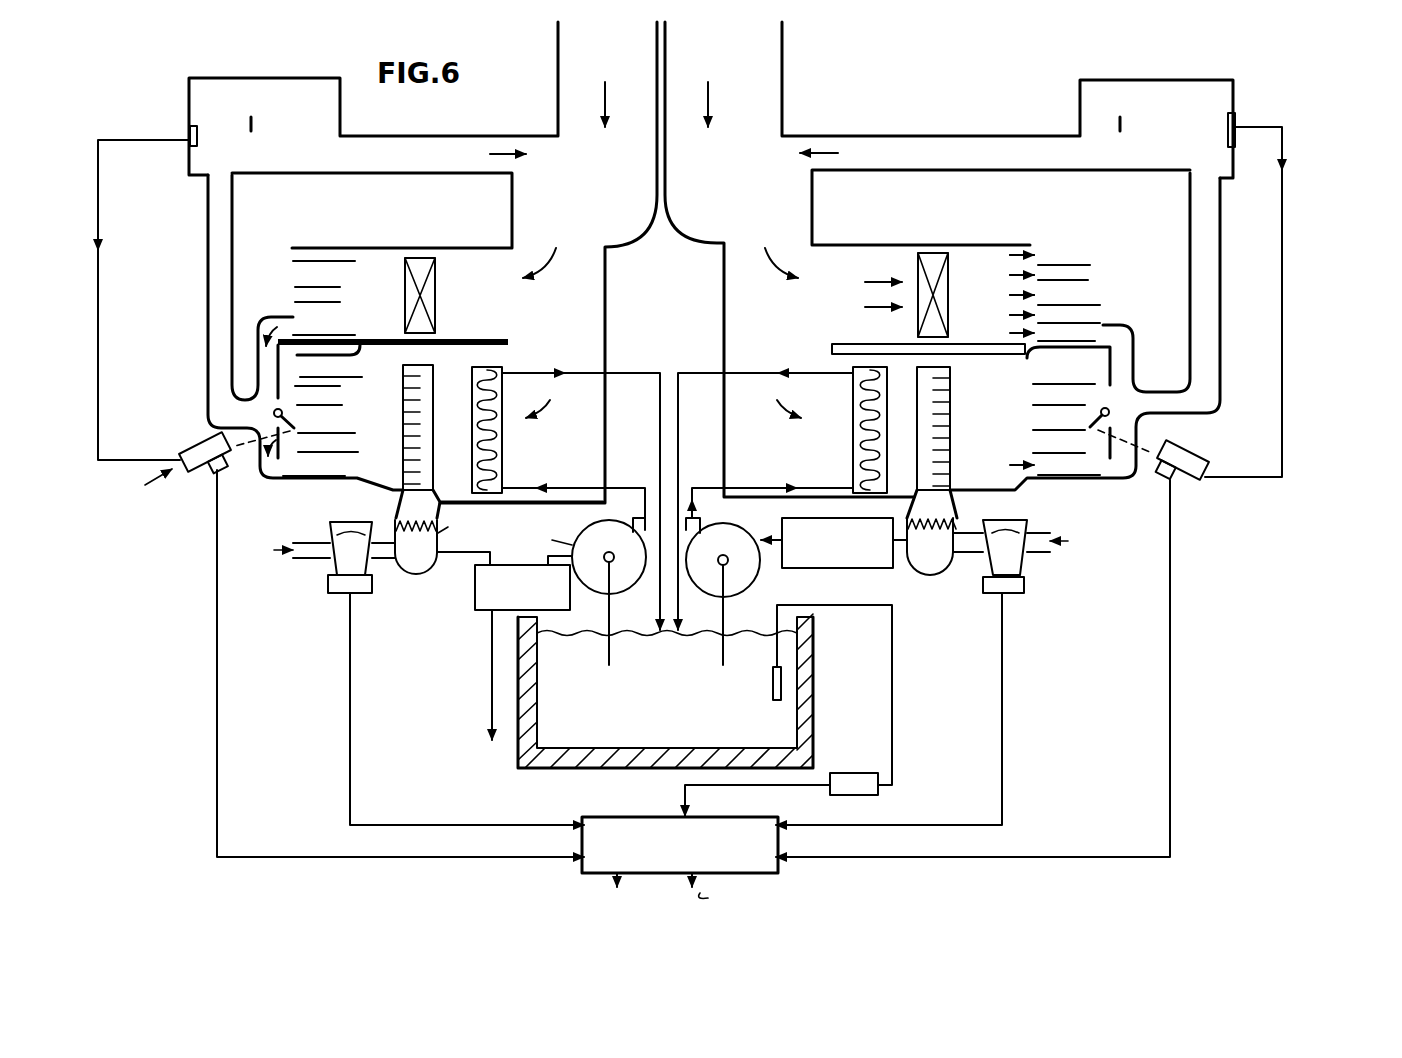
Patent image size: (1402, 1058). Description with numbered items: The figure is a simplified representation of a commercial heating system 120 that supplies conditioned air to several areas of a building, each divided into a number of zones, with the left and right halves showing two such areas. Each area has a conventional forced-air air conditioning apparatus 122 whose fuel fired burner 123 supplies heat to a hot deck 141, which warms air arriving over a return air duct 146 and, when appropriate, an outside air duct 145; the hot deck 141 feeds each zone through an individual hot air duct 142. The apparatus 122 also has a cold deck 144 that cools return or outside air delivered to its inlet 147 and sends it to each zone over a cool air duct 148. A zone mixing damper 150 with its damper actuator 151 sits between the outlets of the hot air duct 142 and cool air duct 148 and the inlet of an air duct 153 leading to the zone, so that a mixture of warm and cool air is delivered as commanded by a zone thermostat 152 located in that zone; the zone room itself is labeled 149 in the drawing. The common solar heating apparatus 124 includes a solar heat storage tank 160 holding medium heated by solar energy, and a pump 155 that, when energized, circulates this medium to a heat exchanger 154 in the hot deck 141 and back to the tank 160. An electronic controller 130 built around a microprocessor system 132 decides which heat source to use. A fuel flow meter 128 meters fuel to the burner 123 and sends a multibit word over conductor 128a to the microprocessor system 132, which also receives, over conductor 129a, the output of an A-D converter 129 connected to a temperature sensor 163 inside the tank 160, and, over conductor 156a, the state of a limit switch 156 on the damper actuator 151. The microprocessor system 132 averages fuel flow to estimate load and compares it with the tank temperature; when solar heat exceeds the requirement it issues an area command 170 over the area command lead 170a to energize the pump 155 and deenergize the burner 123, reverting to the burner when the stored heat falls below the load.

The heating system 120 is at (985, 914).
The air conditioning apparatus 122 is at (490, 607).
The fuel fired burner 123 is at (457, 565).
The solar heating apparatus 124 is at (828, 640).
The fuel flow meter 128 is at (314, 560).
The conductor 128a is at (444, 709).
The A-D converter 129 is at (880, 786).
The conductor 129a is at (797, 790).
The electronic controller 130 is at (566, 878).
The microprocessor system 132 is at (618, 790).
The hot deck 141 is at (435, 431).
The hot air duct 142 is at (266, 478).
The cold deck 144 is at (393, 293).
The outside air duct 145 is at (556, 98).
The return air duct 146 is at (502, 133).
The inlet 147 is at (394, 225).
The cool air duct 148 is at (262, 287).
The zone 1 room 149 is at (373, 98).
The zone mixing damper 150 is at (228, 422).
The damper actuator 151 is at (148, 492).
The zone thermostat 152 is at (119, 274).
The air duct 153 is at (273, 332).
The heat exchanger 154 is at (566, 498).
The pump 155 is at (574, 591).
The limit switch 156 is at (240, 515).
The conductor 156a is at (374, 708).
The solar heat storage tank 160 is at (518, 745).
The temperature sensor 163 is at (782, 690).
The area command 170 is at (461, 588).
The area command lead 170a is at (456, 675).